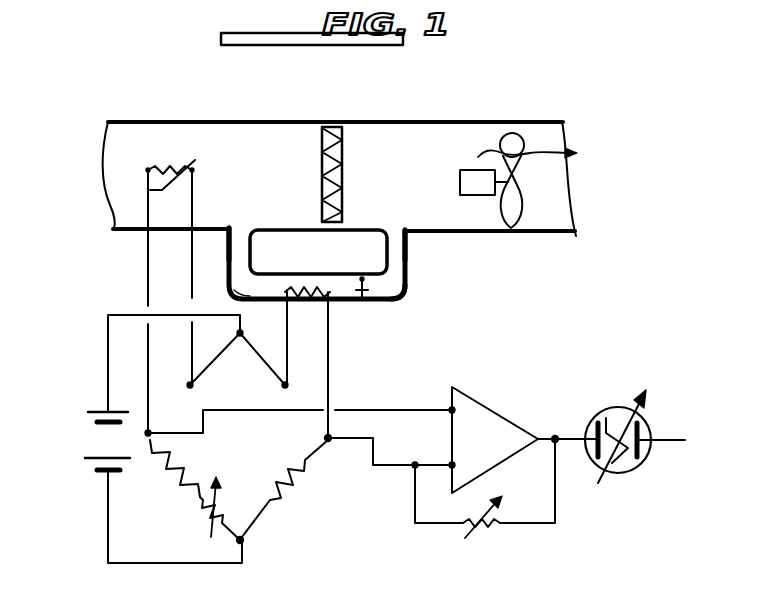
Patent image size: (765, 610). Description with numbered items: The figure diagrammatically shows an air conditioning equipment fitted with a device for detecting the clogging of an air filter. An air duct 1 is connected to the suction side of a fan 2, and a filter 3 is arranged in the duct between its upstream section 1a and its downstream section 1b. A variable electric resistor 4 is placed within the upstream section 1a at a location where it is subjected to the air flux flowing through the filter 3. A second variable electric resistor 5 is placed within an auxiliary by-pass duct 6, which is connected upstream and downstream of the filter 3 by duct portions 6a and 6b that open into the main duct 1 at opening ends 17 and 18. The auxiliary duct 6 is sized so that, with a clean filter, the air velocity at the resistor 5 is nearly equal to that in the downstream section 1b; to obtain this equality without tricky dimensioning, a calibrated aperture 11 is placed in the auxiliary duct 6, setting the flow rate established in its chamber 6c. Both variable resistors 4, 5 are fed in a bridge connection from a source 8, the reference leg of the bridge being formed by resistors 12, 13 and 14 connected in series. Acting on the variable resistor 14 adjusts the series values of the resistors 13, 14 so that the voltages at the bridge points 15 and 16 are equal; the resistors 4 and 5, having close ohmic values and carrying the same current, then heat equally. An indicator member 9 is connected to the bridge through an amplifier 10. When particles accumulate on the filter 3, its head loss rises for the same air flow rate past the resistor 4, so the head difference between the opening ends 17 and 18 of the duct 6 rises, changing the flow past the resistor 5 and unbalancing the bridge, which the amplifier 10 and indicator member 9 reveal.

The air duct 1 is at (247, 120).
The upstream section of the air duct 1a is at (284, 178).
The downstream section of the air duct 1b is at (417, 182).
The fan 2 is at (511, 144).
The filter 3 is at (343, 139).
The variable electric resistor 4 is at (173, 173).
The second variable electric resistor 5 is at (310, 290).
The auxiliary duct 6 is at (414, 265).
The duct portion 6a is at (226, 277).
The duct portion 6b is at (408, 294).
The chamber 6c is at (272, 292).
The source 8 is at (113, 443).
The indicator member 9 is at (594, 418).
The amplifier 10 is at (499, 446).
The calibrated aperture 11 is at (358, 295).
The resistor 12 is at (288, 480).
The resistor 13 is at (165, 479).
The variable resistor 14 is at (221, 499).
The point of the bridge 15 is at (152, 430).
The point of the bridge 16 is at (328, 448).
The opening end of the duct 17 is at (233, 226).
The opening end of the duct 18 is at (397, 228).